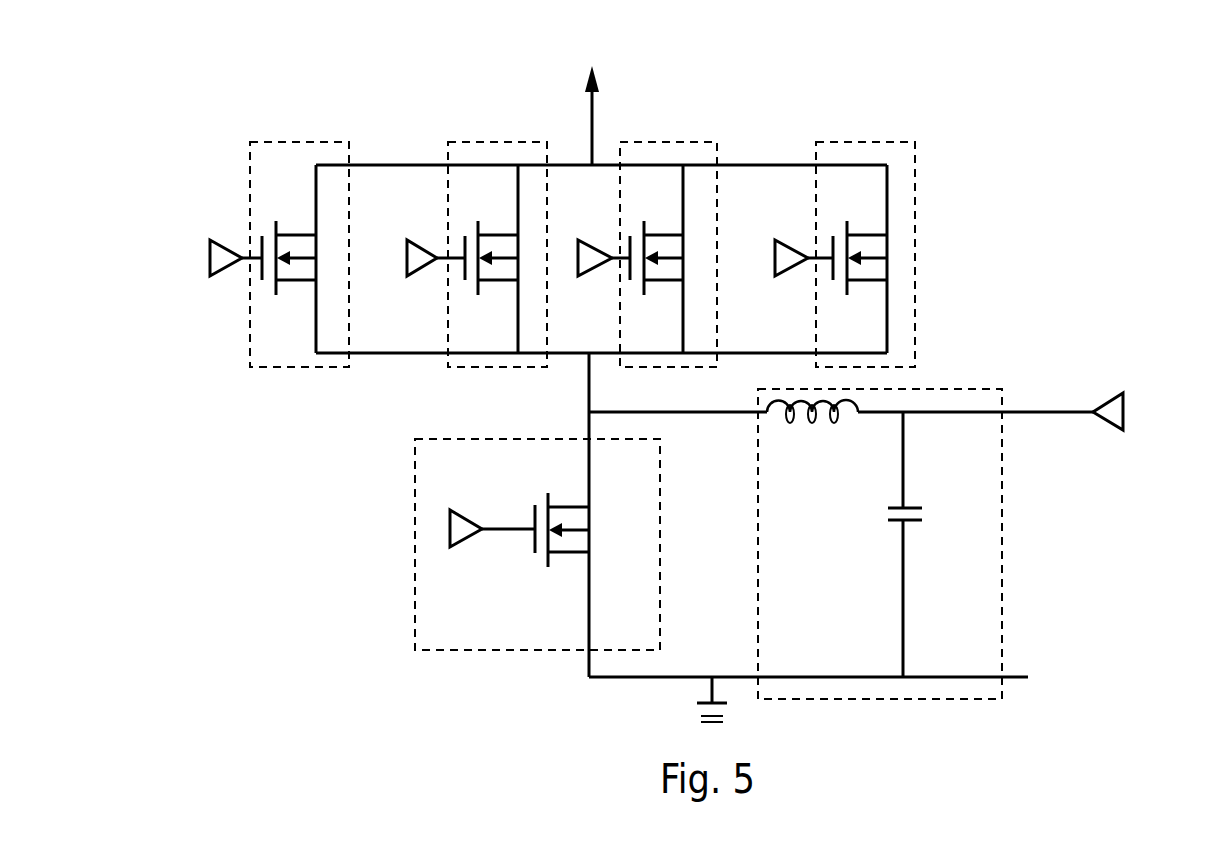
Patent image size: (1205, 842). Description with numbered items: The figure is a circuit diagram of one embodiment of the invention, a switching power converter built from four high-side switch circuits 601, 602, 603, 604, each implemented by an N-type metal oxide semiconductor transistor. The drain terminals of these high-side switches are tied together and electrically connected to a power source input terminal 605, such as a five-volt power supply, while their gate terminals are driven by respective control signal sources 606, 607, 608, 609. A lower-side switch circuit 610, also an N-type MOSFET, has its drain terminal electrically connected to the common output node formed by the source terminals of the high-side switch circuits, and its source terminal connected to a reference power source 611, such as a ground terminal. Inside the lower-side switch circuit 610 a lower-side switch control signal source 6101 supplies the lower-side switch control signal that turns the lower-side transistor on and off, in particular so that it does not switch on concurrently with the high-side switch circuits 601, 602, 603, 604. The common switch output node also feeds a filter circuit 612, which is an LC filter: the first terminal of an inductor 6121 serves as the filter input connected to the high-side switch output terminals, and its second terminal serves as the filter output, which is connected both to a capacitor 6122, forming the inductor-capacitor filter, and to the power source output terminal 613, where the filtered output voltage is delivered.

The high-side switch circuit 601 is at (268, 140).
The high-side switch circuit 602 is at (465, 140).
The high-side switch circuit 603 is at (636, 140).
The high-side switch circuit 604 is at (833, 140).
The power source input terminal 605 is at (591, 104).
The control signal source 606 is at (209, 258).
The control signal source 607 is at (406, 258).
The control signal source 608 is at (590, 276).
The control signal source 609 is at (773, 258).
The lower-side switch circuit 610 is at (574, 544).
The lower-side switch control signal source 6101 is at (474, 545).
The reference power source 611 is at (692, 704).
The filter circuit 612 is at (916, 544).
The inductor 6121 is at (812, 426).
The capacitor 6122 is at (886, 518).
The power source output terminal 613 is at (1125, 412).